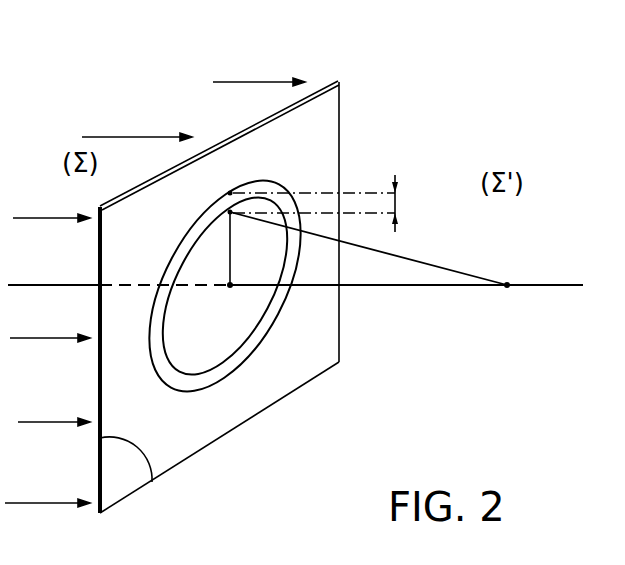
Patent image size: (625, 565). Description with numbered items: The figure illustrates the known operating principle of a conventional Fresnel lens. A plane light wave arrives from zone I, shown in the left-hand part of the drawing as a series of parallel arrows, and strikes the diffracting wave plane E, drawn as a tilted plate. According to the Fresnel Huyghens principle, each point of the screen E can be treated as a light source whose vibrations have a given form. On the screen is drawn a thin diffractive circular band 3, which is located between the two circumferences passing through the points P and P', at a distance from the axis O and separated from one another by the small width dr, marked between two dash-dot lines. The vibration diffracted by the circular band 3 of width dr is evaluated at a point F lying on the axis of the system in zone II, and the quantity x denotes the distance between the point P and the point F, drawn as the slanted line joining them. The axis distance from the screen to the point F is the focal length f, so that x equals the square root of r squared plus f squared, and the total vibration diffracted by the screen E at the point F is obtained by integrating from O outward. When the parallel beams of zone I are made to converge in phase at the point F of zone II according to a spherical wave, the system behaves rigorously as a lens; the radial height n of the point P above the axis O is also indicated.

The diffractive circular band 3 is at (240, 360).
The zone I is at (78, 58).
The zone II is at (472, 67).
The axis O is at (223, 298).
The point P is at (275, 203).
The point P' is at (312, 162).
The radial distance n is at (220, 248).
The width of circular band dr is at (408, 203).
The distance between point P and point F x is at (368, 248).
The point F is at (507, 302).
The focal distance f is at (401, 308).
The diffracting wave plane E is at (126, 461).